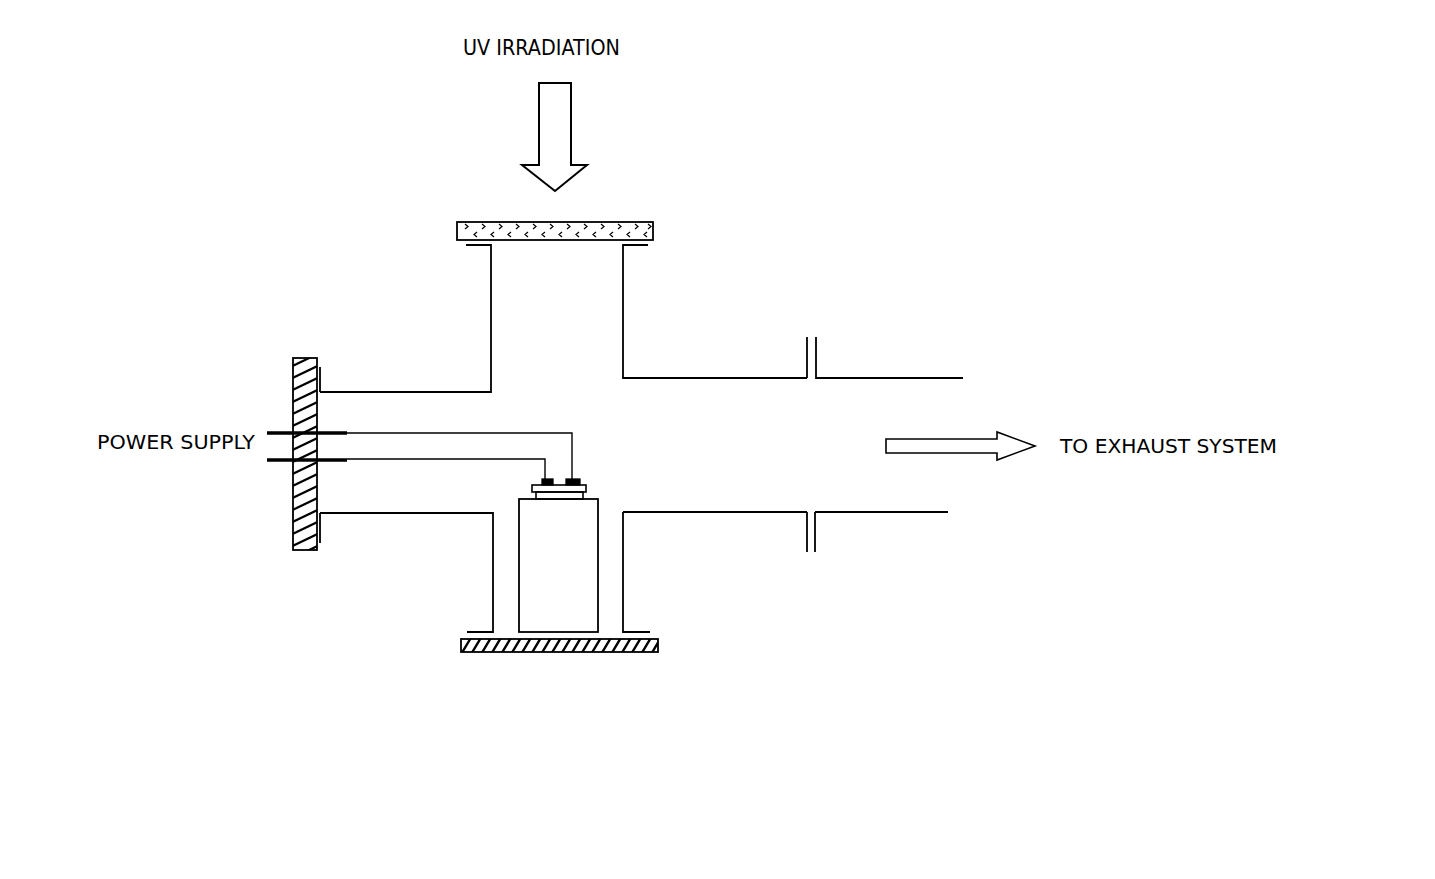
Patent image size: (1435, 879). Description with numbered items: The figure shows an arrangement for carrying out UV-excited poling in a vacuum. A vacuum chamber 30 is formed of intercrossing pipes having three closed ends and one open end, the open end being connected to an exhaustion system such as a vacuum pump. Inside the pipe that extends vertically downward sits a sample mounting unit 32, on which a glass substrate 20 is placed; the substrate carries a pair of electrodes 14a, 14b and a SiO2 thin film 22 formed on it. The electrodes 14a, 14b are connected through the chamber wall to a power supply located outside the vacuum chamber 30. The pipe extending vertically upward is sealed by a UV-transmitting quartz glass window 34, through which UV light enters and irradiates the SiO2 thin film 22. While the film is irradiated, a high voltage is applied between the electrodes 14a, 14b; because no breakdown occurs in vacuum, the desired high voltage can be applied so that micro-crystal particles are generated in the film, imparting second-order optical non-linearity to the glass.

The electrode 14a is at (543, 479).
The electrode 14b is at (573, 479).
The glass substrate 20 is at (532, 492).
The SiO2 thin film 22 is at (586, 492).
The vacuum chamber 30 is at (708, 316).
The sample mounting unit 32 is at (570, 567).
The UV transmitting window 34 is at (455, 231).